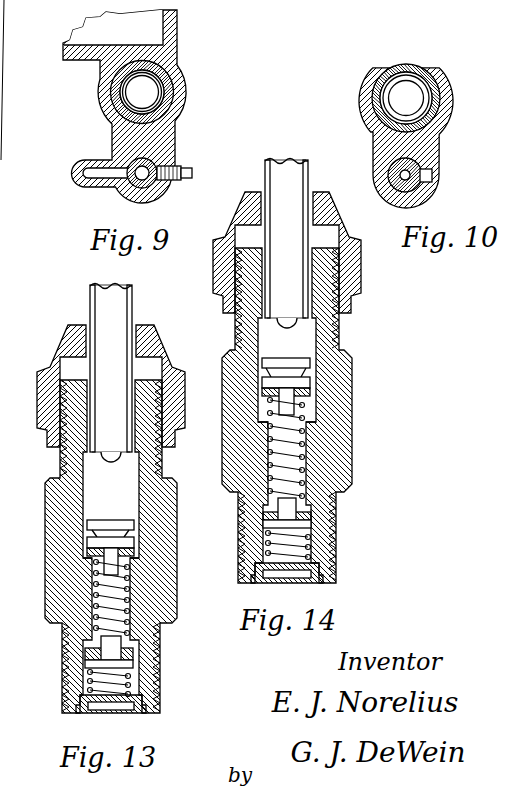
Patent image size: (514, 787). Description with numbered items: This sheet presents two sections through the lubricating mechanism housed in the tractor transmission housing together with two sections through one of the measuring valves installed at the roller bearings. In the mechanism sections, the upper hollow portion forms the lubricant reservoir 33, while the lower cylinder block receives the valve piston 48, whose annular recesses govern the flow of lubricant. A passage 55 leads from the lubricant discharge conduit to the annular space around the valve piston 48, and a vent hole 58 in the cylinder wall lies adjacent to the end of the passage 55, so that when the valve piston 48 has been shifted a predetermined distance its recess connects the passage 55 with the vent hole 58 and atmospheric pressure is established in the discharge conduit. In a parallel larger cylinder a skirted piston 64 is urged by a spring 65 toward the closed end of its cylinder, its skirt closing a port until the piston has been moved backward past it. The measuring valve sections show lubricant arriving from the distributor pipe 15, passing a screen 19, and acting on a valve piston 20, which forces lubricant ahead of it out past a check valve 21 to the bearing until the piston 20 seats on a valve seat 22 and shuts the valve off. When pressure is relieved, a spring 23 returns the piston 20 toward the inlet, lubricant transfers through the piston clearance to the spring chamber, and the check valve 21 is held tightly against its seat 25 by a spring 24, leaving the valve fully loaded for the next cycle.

In FIG. 13, the distributor pipe 15 is at (90, 310).
In FIG. 14, the distributor pipe 15 is at (309, 183).
In FIG. 13, the screen 19 is at (111, 452).
In FIG. 14, the screen 19 is at (289, 318).
In FIG. 13, the valve piston 20 is at (113, 528).
In FIG. 14, the valve piston 20 is at (292, 362).
In FIG. 13, the check valve 21 is at (88, 662).
In FIG. 14, the check valve 21 is at (313, 523).
In FIG. 13, the valve seat 22 is at (92, 566).
In FIG. 14, the valve seat 22 is at (316, 420).
In FIG. 13, the spring 23 is at (97, 588).
In FIG. 14, the spring 23 is at (303, 443).
In FIG. 13, the spring 24 is at (84, 690).
In FIG. 14, the spring 24 is at (313, 549).
In FIG. 13, the seat 25 is at (88, 647).
In FIG. 14, the seat 25 is at (314, 512).
In FIG. 9, the reservoir 33 is at (144, 36).
In FIG. 9, the valve piston 48 is at (150, 182).
In FIG. 10, the valve piston 48 is at (399, 196).
In FIG. 9, the passage 55 is at (99, 172).
In FIG. 10, the vent hole 58 is at (433, 177).
In FIG. 9, the skirted piston 64 is at (181, 68).
In FIG. 10, the skirted piston 64 is at (390, 68).
In FIG. 9, the spring 65 is at (163, 88).
In FIG. 10, the spring 65 is at (410, 78).